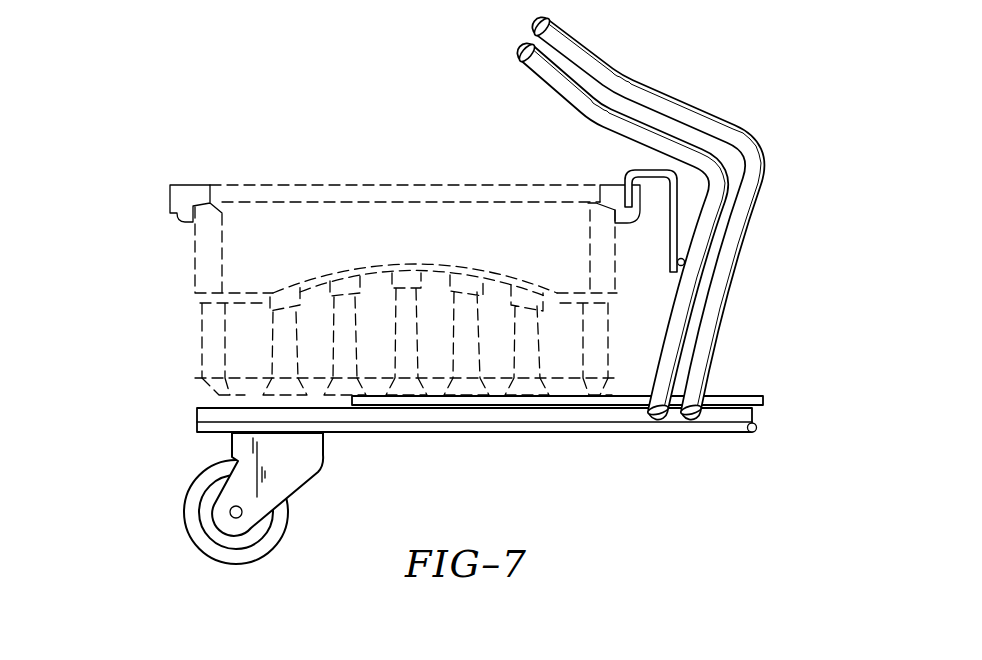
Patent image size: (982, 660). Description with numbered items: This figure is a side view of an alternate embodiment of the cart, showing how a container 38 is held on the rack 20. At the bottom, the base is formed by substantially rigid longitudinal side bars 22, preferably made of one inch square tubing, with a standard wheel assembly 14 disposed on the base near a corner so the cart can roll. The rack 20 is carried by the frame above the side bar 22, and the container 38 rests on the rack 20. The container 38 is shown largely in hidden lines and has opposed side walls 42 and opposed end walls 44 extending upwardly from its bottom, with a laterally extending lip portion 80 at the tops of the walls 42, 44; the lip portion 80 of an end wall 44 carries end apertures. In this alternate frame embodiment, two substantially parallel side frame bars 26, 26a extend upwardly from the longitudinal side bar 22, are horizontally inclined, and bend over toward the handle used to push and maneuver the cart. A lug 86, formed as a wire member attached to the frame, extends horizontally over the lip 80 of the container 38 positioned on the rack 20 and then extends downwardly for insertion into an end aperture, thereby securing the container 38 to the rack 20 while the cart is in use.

The wheel assembly 14 is at (172, 507).
The rack structure 20 is at (728, 397).
The longitudinal side bar 22 is at (550, 423).
The side frame bar 26 is at (661, 216).
The side frame bar 26a is at (627, 131).
The container 38 is at (432, 230).
The side wall 42 is at (360, 230).
The end wall 44 is at (195, 251).
The lip portion 80 is at (242, 166).
The lug 86 is at (672, 192).